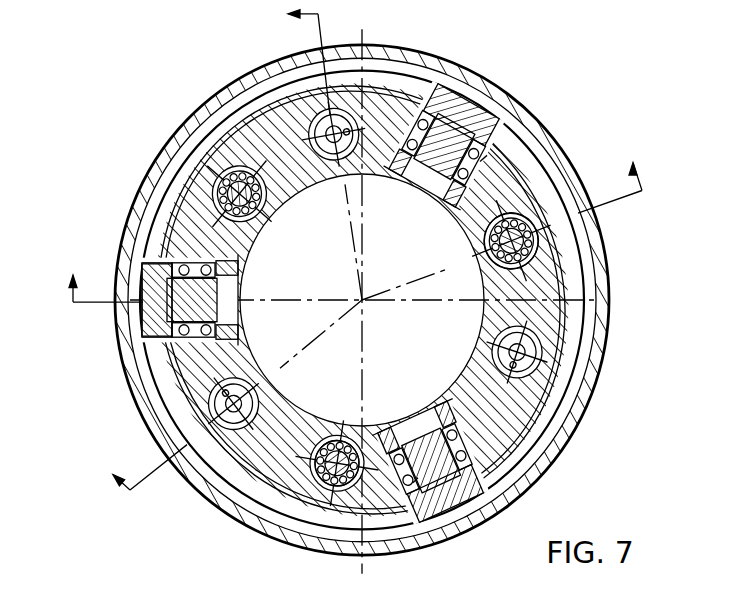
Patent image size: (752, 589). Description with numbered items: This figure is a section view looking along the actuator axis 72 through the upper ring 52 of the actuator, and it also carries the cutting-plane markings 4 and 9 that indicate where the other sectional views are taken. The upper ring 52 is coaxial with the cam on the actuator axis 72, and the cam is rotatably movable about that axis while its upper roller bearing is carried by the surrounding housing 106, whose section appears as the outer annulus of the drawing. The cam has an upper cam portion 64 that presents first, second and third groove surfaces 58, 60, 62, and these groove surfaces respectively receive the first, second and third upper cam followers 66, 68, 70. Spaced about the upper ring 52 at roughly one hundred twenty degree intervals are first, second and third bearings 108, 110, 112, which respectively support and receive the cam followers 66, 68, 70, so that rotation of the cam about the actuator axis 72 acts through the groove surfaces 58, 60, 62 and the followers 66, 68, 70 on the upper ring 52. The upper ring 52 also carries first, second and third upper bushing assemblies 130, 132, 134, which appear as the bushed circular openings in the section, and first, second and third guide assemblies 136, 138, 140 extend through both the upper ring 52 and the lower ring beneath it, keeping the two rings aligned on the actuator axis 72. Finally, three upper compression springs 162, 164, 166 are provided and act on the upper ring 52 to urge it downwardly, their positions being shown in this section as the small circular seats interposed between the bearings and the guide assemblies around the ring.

The section line 4- 4 is at (349, 230).
The section line 9- 9 is at (212, 253).
The upper ring 52 is at (405, 300).
The first groove surface 58 is at (357, 296).
The second groove surface 60 is at (171, 123).
The third groove surface 62 is at (362, 279).
The upper cam portion 64 is at (330, 300).
The first upper cam follower 66 is at (115, 300).
The second upper cam follower 68 is at (436, 481).
The third upper cam follower 70 is at (450, 128).
The actuator axis 72 is at (365, 301).
The housing 106 is at (185, 147).
The first bearing 108 is at (148, 273).
The second bearing 110 is at (397, 532).
The third bearing 112 is at (537, 129).
The first upper bushing assembly 130 is at (362, 300).
The second upper bushing assembly 132 is at (333, 423).
The third upper bushing assembly 134 is at (537, 218).
The first guide assembly 136 is at (199, 193).
The second guide assembly 138 is at (315, 491).
The third guide assembly 140 is at (573, 241).
The first upper compression spring 162 is at (181, 403).
The second upper compression spring 164 is at (566, 356).
The third upper compression spring 166 is at (288, 102).